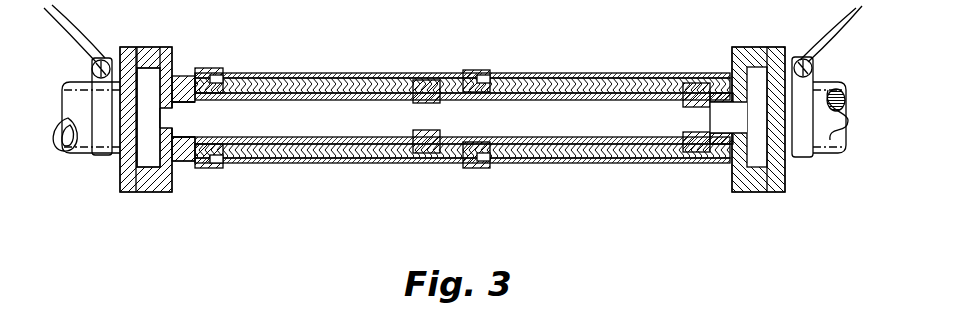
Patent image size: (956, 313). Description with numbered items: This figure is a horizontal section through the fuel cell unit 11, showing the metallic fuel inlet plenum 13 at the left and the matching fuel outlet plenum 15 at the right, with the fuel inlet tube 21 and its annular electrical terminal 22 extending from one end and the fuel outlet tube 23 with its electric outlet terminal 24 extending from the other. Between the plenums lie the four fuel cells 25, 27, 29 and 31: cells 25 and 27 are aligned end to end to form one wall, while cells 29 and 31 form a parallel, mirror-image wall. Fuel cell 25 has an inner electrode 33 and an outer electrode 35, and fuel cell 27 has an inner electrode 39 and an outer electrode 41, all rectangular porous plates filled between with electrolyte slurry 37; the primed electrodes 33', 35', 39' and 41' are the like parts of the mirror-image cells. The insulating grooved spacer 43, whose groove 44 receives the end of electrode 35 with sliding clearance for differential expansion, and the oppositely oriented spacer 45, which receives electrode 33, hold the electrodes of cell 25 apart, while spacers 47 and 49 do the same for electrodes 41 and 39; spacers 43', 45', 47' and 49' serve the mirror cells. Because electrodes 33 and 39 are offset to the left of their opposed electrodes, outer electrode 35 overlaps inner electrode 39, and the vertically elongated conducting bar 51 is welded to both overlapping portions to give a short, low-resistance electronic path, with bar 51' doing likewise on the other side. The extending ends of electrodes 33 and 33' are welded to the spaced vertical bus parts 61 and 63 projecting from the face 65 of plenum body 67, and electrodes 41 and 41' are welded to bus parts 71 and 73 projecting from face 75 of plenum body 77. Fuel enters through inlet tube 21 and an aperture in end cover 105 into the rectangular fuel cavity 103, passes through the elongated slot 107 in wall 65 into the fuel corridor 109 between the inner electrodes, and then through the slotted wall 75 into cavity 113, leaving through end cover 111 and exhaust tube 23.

The unit 11 is at (379, 45).
The fuel inlet plenum 13 is at (158, 233).
The fuel outlet plenum 15 is at (759, 225).
The fuel inlet tube 21 is at (78, 82).
The annular electrical terminal 22 is at (101, 155).
The fuel outlet tube 23 is at (826, 82).
The electric outlet terminal 24 is at (805, 140).
The fuel cell 25 is at (318, 150).
The fuel cell 27 is at (580, 152).
The fuel cell 29 is at (330, 84).
The fuel cell 31 is at (540, 80).
The inner electrode 33 is at (462, 126).
The inner electrode 33' is at (462, 108).
The outer electrode 35 is at (462, 176).
The outer electrode 35' is at (462, 57).
The electrolyte slurry 37 is at (282, 78).
The inner electrode 39 is at (528, 127).
The inner electrode 39' is at (552, 108).
The outer electrode 41 is at (650, 175).
The outer electrode 41' is at (550, 57).
The insulating grooved spacer 43 is at (210, 170).
The insulating grooved spacer 43' is at (234, 59).
The groove 44 is at (228, 164).
The insulating grooved spacer 45 is at (420, 131).
The insulating grooved spacer 45' is at (443, 103).
The insulating grooved spacer 47 is at (486, 168).
The insulating grooved spacer 47' is at (480, 64).
The insulating grooved spacer 49 is at (683, 132).
The insulating grooved spacer 49' is at (680, 77).
The conducting bar 51 is at (453, 176).
The conducting bar 51' is at (449, 57).
The bus part 61 is at (185, 163).
The bus part 63 is at (182, 80).
The vertical face 65 is at (172, 52).
The plenum body 67 is at (150, 50).
The bus part 71 is at (722, 146).
The bus part 73 is at (722, 92).
The face 75 is at (736, 60).
The plenum body 77 is at (754, 50).
The fuel cavity 103 is at (150, 105).
The end cover 105 is at (128, 192).
The elongated slot 107 is at (182, 115).
The fuel corridor 109 is at (350, 128).
The end cover 111 is at (784, 186).
The cavity 113 is at (756, 135).